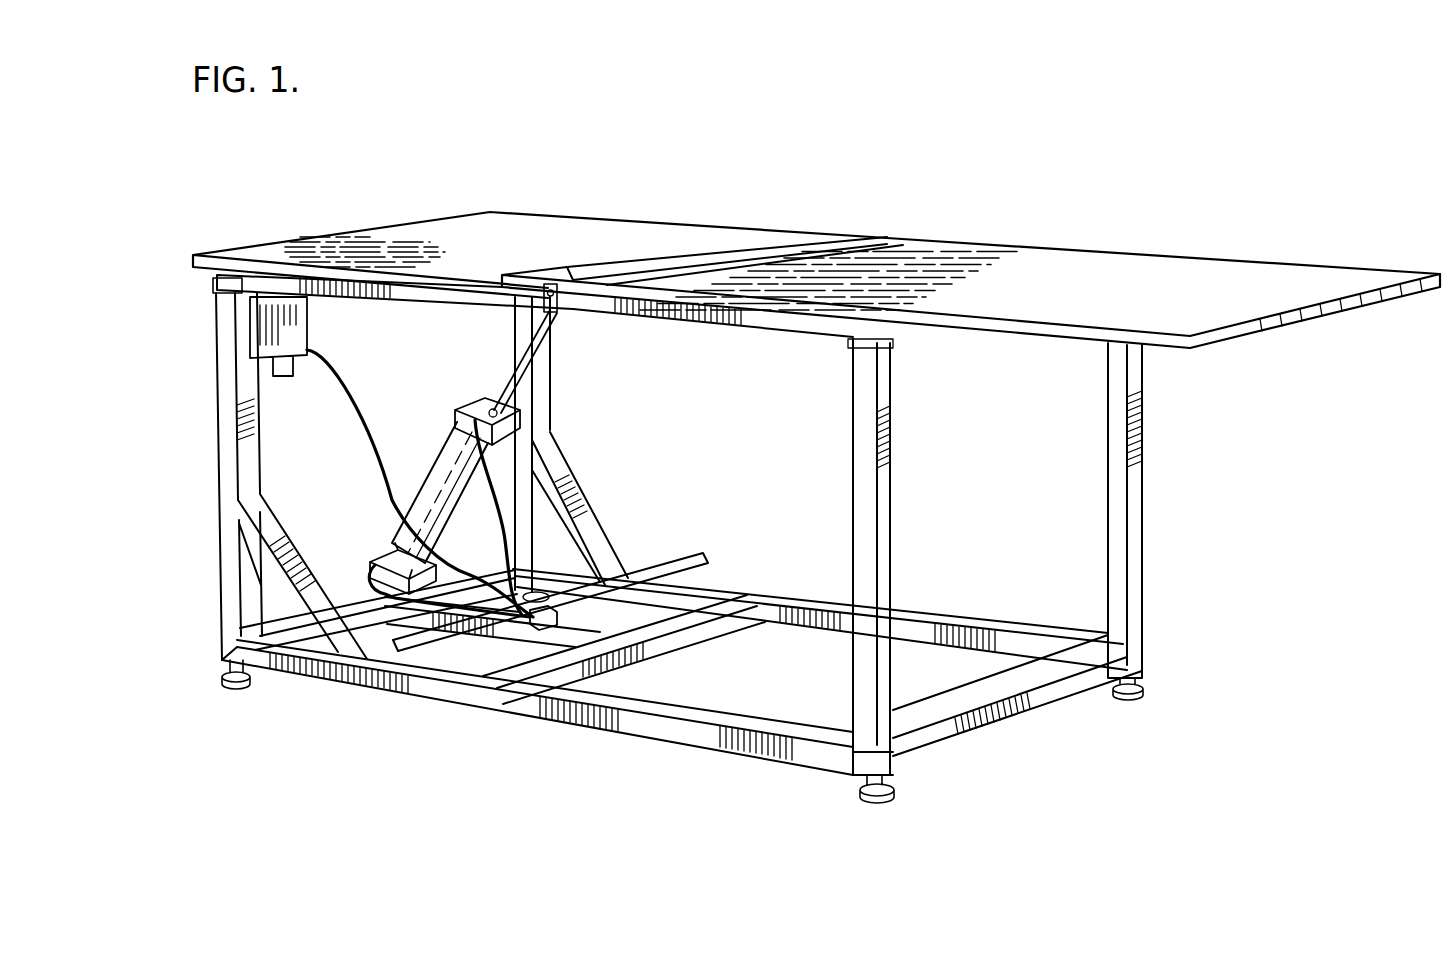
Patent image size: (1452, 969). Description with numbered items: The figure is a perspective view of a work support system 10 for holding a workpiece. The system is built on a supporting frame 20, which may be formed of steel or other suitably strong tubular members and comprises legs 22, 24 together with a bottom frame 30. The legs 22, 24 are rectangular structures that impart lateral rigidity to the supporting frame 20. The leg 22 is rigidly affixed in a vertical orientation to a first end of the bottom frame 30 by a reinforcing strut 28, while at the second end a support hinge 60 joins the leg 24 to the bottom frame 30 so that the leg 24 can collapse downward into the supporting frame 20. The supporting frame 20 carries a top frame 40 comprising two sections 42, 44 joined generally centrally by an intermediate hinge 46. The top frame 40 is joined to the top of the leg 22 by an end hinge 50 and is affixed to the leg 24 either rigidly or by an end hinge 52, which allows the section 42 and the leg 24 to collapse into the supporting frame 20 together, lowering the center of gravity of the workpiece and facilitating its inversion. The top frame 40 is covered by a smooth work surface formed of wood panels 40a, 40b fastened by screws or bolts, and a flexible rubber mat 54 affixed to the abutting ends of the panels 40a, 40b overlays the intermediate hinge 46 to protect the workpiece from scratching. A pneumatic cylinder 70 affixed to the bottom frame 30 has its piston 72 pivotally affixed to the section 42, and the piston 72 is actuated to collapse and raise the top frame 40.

The work support system 10 is at (903, 213).
The supporting frame 20 is at (1168, 513).
The leg 22 is at (226, 464).
The leg 24 is at (893, 512).
The reinforcing strut 28 is at (258, 553).
The bottom frame 30 is at (655, 725).
The top frame 40 is at (800, 352).
The wood panel 40a is at (507, 263).
The wood panel 40b is at (1120, 303).
The section 42 is at (213, 279).
The section 44 is at (748, 318).
The intermediate hinge 46 is at (551, 286).
The end hinge 50 is at (228, 282).
The end hinge 52 is at (847, 344).
The rubber mat 54 is at (806, 238).
The support hinge 60 is at (840, 749).
The pneumatic cylinder 70 is at (450, 478).
The piston 72 is at (550, 356).